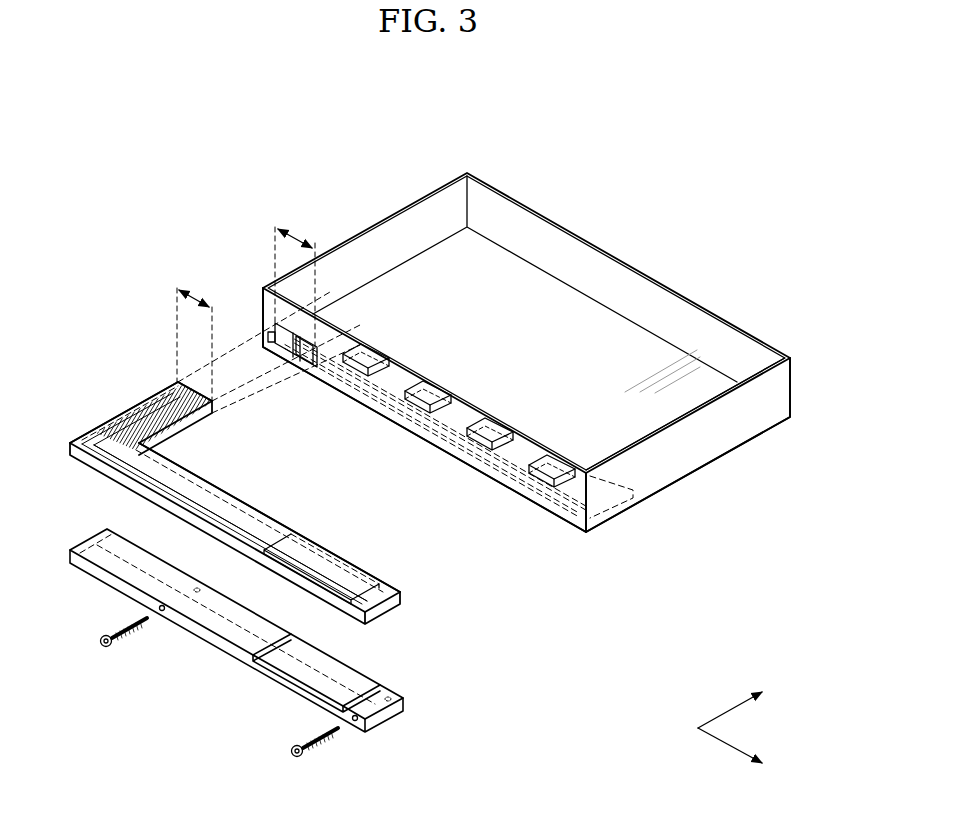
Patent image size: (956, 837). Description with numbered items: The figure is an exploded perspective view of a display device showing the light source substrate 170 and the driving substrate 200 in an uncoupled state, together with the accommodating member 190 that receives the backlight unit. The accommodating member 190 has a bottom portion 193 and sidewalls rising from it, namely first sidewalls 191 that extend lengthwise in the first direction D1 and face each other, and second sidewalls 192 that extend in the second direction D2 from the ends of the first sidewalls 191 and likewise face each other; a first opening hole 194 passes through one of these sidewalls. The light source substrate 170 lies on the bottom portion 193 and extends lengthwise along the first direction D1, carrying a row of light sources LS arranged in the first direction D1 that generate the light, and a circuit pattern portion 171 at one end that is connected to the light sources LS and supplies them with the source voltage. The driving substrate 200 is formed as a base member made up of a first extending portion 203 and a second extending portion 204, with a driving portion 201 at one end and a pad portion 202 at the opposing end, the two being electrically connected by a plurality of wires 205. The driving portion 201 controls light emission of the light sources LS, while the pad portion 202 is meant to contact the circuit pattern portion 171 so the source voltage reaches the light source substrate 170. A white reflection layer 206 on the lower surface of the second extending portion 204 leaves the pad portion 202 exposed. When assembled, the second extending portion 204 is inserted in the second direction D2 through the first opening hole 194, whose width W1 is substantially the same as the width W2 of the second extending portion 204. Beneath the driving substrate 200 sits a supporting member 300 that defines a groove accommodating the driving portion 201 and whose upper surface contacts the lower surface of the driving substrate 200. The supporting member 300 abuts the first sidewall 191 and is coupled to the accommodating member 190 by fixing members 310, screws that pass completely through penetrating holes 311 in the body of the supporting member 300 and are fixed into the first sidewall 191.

The accommodating member 190 is at (692, 256).
The first sidewall 191 is at (745, 362).
The second sidewall 192 is at (727, 433).
The bottom portion 193 is at (622, 447).
The light source substrate 170 is at (460, 412).
The light sources LS is at (492, 428).
The circuit pattern portion 171 is at (290, 334).
The first opening hole 194 is at (303, 343).
The driving substrate 200 is at (254, 498).
The driving portion 201 is at (343, 578).
The pad portion 202 is at (155, 412).
The first extending portion 203 is at (260, 518).
The second extending portion 204 is at (170, 392).
The wire 205 is at (177, 480).
The reflection layer 206 is at (122, 425).
The supporting member 300 is at (259, 646).
The fixing member 310 is at (103, 645).
The penetrating hole 311 is at (162, 612).
The width of the first opening hole W1 is at (295, 280).
The width of the second extending portion W2 is at (196, 337).
The first direction D1 is at (744, 756).
The second direction D2 is at (744, 700).